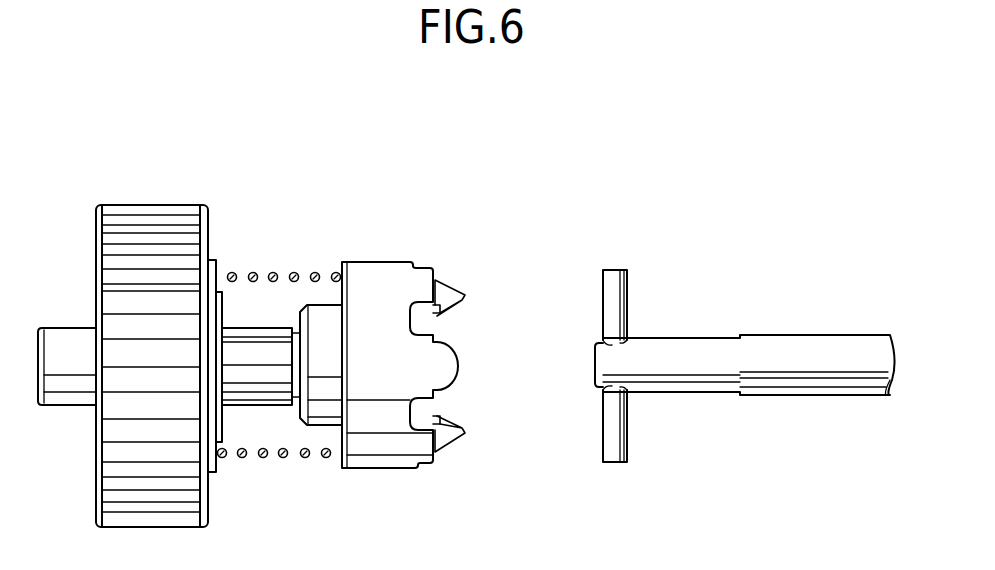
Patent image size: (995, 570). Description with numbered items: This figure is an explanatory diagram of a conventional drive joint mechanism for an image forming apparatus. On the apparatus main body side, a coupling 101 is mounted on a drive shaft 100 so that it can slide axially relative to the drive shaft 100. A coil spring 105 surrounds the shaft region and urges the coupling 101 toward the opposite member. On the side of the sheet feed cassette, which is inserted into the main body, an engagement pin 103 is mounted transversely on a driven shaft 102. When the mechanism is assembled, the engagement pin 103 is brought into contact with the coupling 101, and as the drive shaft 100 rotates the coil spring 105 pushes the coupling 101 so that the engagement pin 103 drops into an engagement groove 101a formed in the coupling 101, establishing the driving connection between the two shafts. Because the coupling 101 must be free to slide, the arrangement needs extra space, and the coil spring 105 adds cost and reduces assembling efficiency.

The drive shaft 100 is at (261, 305).
The coupling 101 is at (383, 264).
The engagement groove 101a is at (428, 318).
The driven shaft 102 is at (800, 336).
The engagement pin 103 is at (610, 268).
The coil spring 105 is at (263, 459).